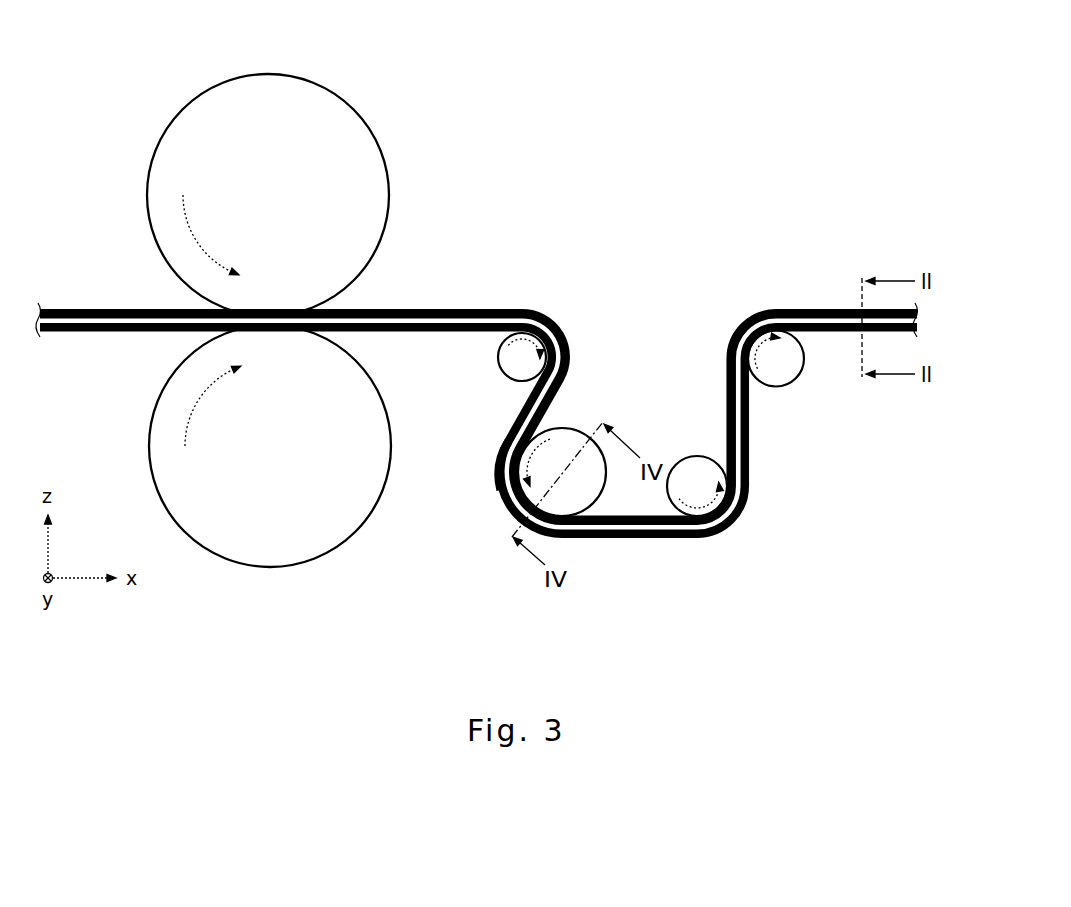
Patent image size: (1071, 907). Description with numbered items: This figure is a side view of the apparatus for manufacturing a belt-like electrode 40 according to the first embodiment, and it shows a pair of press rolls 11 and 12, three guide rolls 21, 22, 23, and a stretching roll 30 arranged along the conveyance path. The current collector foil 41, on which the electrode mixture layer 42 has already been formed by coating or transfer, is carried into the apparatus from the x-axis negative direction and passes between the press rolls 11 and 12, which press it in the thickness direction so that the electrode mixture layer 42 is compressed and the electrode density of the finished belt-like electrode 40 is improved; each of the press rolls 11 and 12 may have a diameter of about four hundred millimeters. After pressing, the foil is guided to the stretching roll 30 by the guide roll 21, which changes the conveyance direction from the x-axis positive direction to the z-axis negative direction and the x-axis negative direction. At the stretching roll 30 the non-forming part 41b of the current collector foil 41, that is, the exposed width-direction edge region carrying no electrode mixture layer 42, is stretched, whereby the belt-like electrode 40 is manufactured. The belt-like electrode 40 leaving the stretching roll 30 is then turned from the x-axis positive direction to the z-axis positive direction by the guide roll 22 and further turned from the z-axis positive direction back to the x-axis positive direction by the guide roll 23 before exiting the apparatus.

The press roll 11 is at (345, 108).
The press roll 12 is at (345, 533).
The guide roll 21 is at (507, 372).
The guide roll 22 is at (702, 456).
The guide roll 23 is at (781, 384).
The stretching roll 30 is at (577, 430).
The belt-like electrode 40 is at (477, 426).
The current collector foil 41 is at (60, 309).
The non-forming part 41b is at (499, 489).
The electrode mixture layer 42 is at (95, 309).